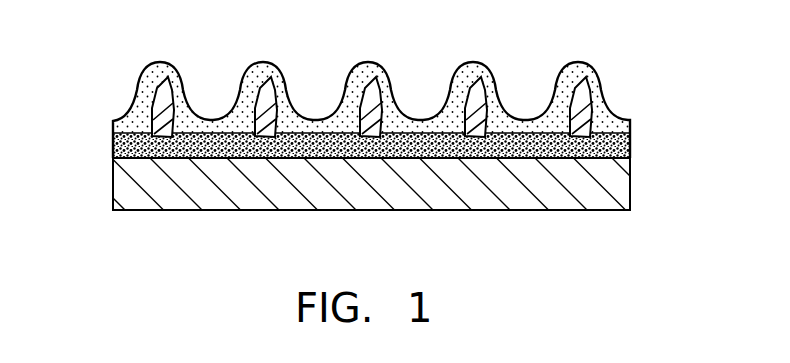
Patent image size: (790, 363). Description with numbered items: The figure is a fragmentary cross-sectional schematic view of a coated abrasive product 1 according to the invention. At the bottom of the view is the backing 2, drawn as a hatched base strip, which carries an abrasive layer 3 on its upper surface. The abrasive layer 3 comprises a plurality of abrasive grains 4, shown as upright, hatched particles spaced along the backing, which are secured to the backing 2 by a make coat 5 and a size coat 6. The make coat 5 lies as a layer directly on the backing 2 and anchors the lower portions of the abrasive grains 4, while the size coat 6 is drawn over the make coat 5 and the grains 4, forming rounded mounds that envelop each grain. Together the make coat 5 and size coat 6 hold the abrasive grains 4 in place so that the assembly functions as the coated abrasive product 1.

The coated abrasive product 1 is at (362, 127).
The backing 2 is at (207, 197).
The abrasive layer 3 is at (362, 89).
The abrasive grains 4 is at (262, 90).
The make coat 5 is at (113, 147).
The size coat 6 is at (135, 113).